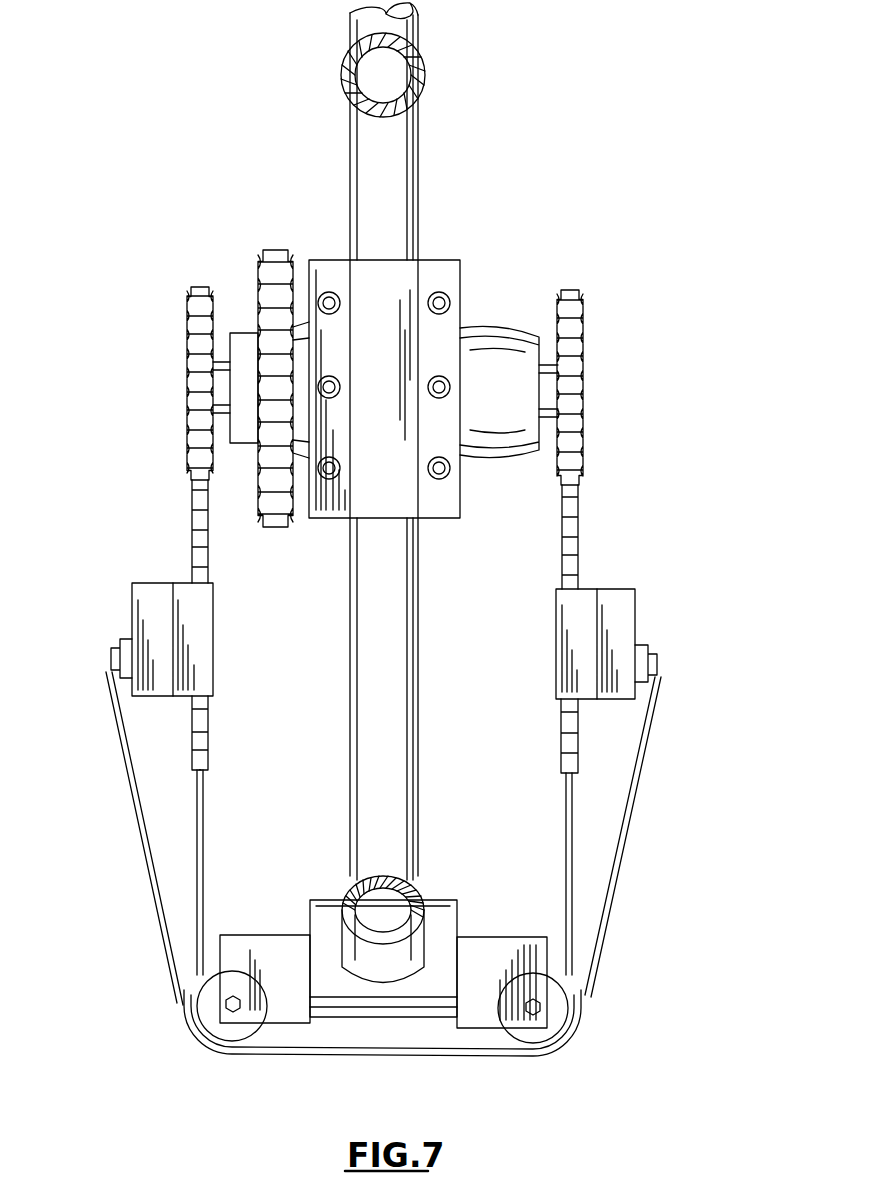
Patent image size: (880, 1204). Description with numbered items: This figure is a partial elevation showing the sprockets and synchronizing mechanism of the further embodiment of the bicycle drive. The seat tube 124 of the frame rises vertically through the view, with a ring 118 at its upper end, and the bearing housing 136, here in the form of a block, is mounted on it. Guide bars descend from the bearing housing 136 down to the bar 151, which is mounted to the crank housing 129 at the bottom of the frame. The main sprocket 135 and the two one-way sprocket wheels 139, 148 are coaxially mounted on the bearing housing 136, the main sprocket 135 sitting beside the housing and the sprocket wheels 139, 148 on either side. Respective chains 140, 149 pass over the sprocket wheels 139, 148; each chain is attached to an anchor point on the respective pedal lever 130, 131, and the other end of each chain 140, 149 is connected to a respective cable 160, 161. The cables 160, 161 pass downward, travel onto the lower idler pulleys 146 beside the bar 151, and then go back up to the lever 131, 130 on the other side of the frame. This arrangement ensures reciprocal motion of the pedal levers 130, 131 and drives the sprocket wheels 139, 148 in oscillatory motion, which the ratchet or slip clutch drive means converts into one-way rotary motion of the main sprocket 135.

The bearing ring 118 is at (425, 72).
The seat tube 124 is at (418, 200).
The crank housing 129 is at (437, 900).
The pedal lever 130 is at (636, 617).
The pedal lever 131 is at (132, 612).
The main sprocket 135 is at (278, 250).
The bearing housing 136 is at (460, 302).
The one-way sprocket wheel 139 is at (187, 352).
The chain 140 is at (193, 538).
The lower idler pulley 146 is at (207, 1040).
The one-way sprocket wheel 148 is at (583, 318).
The chain 149 is at (580, 540).
The bar 151 is at (275, 935).
The cable 160 is at (203, 820).
The cable 161 is at (142, 813).